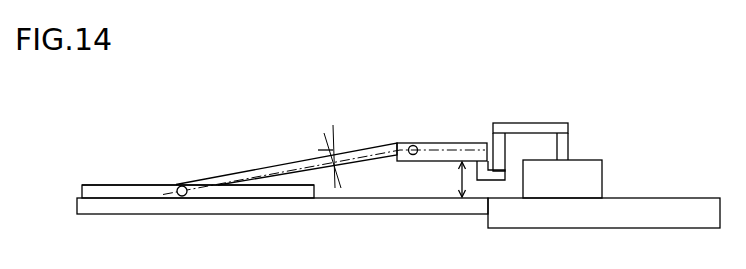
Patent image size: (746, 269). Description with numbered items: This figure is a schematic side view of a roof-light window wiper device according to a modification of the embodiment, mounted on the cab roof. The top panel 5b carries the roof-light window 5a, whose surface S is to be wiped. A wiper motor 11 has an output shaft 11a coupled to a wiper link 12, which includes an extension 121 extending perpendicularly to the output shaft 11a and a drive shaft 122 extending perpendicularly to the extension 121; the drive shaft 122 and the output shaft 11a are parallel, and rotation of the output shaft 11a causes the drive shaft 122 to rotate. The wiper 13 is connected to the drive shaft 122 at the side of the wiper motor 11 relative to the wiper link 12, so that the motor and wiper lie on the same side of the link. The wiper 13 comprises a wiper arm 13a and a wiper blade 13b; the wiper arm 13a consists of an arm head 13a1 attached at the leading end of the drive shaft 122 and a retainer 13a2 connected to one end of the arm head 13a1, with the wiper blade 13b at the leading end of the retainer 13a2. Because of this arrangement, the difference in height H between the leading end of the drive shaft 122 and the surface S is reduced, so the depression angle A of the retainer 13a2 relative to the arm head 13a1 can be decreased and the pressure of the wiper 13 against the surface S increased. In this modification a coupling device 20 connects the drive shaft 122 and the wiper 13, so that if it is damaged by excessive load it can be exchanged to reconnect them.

The surface of roof-light window S is at (78, 200).
The roof-light window 5a is at (92, 208).
The top panel 5b is at (687, 212).
The wiper motor 11 is at (592, 173).
The output shaft 11a is at (561, 143).
The wiper link 12 is at (560, 74).
The extension 121 is at (537, 130).
The drive shaft 122 is at (496, 159).
The wiper 13 is at (232, 173).
The wiper arm 13a is at (254, 172).
The arm head 13a1 is at (442, 143).
The retainer 13a2 is at (287, 170).
The wiper blade 13b is at (132, 188).
The coupling device 20 is at (480, 183).
The depression angle A is at (318, 150).
The height H is at (452, 179).